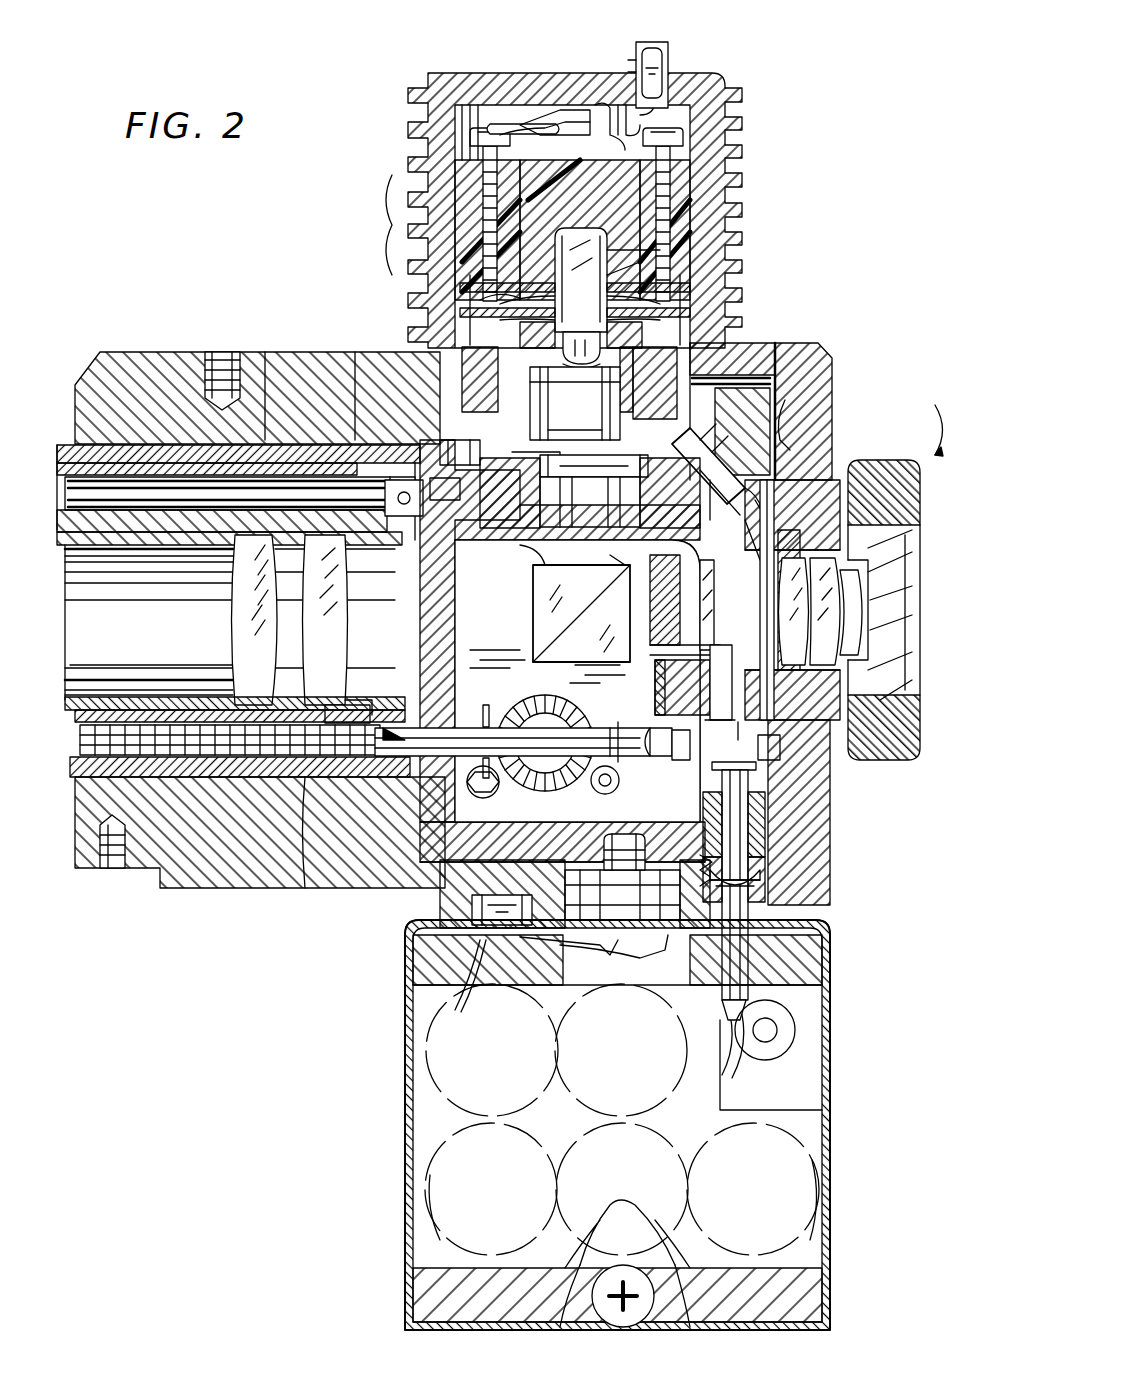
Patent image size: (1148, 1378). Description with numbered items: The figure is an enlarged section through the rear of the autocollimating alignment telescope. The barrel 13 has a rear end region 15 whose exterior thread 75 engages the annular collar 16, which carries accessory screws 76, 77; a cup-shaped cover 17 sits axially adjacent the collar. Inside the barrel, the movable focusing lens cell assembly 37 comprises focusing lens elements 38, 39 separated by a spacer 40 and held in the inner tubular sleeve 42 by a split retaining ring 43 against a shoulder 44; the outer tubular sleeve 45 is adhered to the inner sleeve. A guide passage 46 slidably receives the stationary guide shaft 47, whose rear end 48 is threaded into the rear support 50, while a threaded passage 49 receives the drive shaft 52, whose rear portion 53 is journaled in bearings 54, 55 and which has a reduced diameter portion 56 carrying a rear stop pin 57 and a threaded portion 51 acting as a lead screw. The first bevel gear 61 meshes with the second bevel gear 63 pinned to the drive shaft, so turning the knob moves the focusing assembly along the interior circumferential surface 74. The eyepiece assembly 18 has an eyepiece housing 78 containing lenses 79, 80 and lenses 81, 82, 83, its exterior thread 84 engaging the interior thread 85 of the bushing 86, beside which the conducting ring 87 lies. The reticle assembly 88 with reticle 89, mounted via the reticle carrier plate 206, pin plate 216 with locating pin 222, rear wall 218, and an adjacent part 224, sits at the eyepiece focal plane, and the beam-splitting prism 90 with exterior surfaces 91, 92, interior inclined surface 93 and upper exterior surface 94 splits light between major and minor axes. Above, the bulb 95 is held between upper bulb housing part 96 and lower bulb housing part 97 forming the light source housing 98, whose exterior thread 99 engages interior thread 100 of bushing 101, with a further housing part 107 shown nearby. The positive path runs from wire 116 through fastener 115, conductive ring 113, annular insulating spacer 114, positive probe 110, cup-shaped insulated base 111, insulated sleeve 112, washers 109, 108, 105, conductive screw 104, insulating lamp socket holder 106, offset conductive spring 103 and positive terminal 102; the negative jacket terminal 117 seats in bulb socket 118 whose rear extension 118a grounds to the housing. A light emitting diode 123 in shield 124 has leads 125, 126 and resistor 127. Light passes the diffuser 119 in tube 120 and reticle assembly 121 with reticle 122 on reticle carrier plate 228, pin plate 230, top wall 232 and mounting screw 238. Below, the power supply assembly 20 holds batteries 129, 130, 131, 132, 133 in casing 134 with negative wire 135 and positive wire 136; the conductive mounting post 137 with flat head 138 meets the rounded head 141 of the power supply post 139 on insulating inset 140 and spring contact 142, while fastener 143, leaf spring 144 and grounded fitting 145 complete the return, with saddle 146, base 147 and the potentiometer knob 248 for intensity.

The main tube or barrel 13 is at (70, 445).
The rear end region 15 is at (265, 440).
The annular collar 16 is at (240, 868).
The cup-shaped cover 17 is at (812, 356).
The eyepiece assembly 18 is at (924, 421).
The power supply assembly 20 is at (838, 1125).
The movable focusing lens cell assembly 37 is at (95, 635).
The focusing lens element 38 is at (235, 650).
The focusing lens element 39 is at (350, 628).
The spacer 40 is at (280, 665).
The inner tubular sleeve 42 is at (78, 712).
The split retaining ring 43 is at (138, 660).
The shoulder 44 is at (402, 528).
The outer tubular sleeve 45 is at (80, 740).
The guide passage 46 is at (95, 478).
The guide shaft 47 is at (130, 508).
The rear end 48 is at (455, 535).
The threaded passage 49 is at (311, 843).
The rear support 50 is at (475, 555).
The threaded portion 51 is at (75, 768).
The drive shaft 52 is at (400, 725).
The rear portion 53 is at (491, 735).
The bearing 54 is at (680, 756).
The bearing 55 is at (479, 791).
The reduced diameter portion 56 is at (347, 703).
The rear stop pin 57 is at (360, 690).
The first bevel gear 61 is at (540, 700).
The second bevel gear 63 is at (605, 792).
The interior circumferential surface 74 is at (135, 380).
The exterior thread 75 is at (355, 440).
The accessory screw 76 is at (220, 360).
The accessory screw 77 is at (118, 868).
The eyepiece housing 78 is at (880, 760).
The lens 79 is at (795, 612).
The lens 80 is at (785, 630).
The lens 81 is at (842, 600).
The lens 82 is at (850, 620).
The lens 83 is at (860, 640).
The exterior thread 84 is at (900, 462).
The interior thread 85 is at (770, 480).
The bushing 86 is at (790, 482).
The electrically-conducting ring 87 is at (746, 736).
The reticle assembly 88 is at (722, 717).
The reticle 89 is at (685, 642).
The beam-splitting prism 90 is at (533, 596).
The exterior surface 91 is at (533, 622).
The exterior surface 92 is at (632, 610).
The interior inclined surface 93 is at (562, 622).
The upper exterior surface 94 is at (607, 555).
The bulb 95 is at (593, 353).
The upper bulb housing part 96 is at (730, 80).
The lower bulb housing part 97 is at (720, 250).
The light source housing 98 is at (371, 225).
The exterior thread 99 is at (650, 420).
The interior thread 100 is at (720, 346).
The bushing 101 is at (790, 345).
The positive rear conductive terminal 102 is at (560, 105).
The offset conductive spring 103 is at (555, 131).
The conductive screw 104 is at (468, 180).
The conductive washer 105 is at (700, 280).
The insulating lamp socket holder 106 is at (695, 196).
The socket block 107 is at (700, 168).
The spring washer 108 is at (690, 300).
The conductive washer 109 is at (700, 318).
The positive probe 110 is at (460, 312).
The cup-shaped insulated base 111 is at (460, 287).
The insulated sleeve 112 is at (455, 335).
The conductive ring 113 is at (722, 479).
The annular insulating spacer 114 is at (476, 449).
The fastener 115 is at (713, 496).
The electrical wire 116 is at (735, 534).
The negative jacket terminal 117 is at (598, 291).
The bulb socket 118 is at (640, 270).
The rear extension 118a is at (619, 128).
The light diffuser or filter 119 is at (560, 380).
The tube 120 is at (560, 428).
The reticle assembly 121 is at (612, 462).
The reticle 122 is at (565, 484).
The light emitting diode 123 is at (668, 48).
The shield 124 is at (655, 42).
The lead 125 is at (622, 110).
The lead 126 is at (664, 106).
The resistor 127 is at (520, 124).
The battery 129 is at (518, 1065).
The battery 130 is at (641, 1065).
The battery 131 is at (518, 1204).
The battery 132 is at (641, 1194).
The battery 133 is at (775, 1194).
The casing 134 is at (832, 1215).
The negative or grounding wire 135 is at (455, 1007).
The positive wire 136 is at (732, 1051).
The conductive mounting post 137 is at (830, 955).
The flat head 138 is at (830, 895).
The conductive power supply post 139 is at (730, 798).
The threaded insulating inset 140 is at (712, 832).
The rounded head 141 is at (795, 870).
The spring contact 142 is at (728, 760).
The fastener 143 is at (569, 957).
The leaf spring 144 is at (615, 950).
The grounded conductive fitting 145 is at (628, 905).
The saddle 146 is at (438, 912).
The base 147 is at (828, 1296).
The reticle carrier plate 206 is at (698, 602).
The pin plate 216 is at (680, 660).
The rear wall 218 is at (660, 680).
The locating pin 222 is at (708, 712).
The lens 224 is at (718, 612).
The reticle carrier plate 228 is at (445, 498).
The pin plate 230 is at (495, 545).
The top wall 232 is at (551, 553).
The mounting screw 238 is at (521, 463).
The external knob 248 is at (797, 1030).